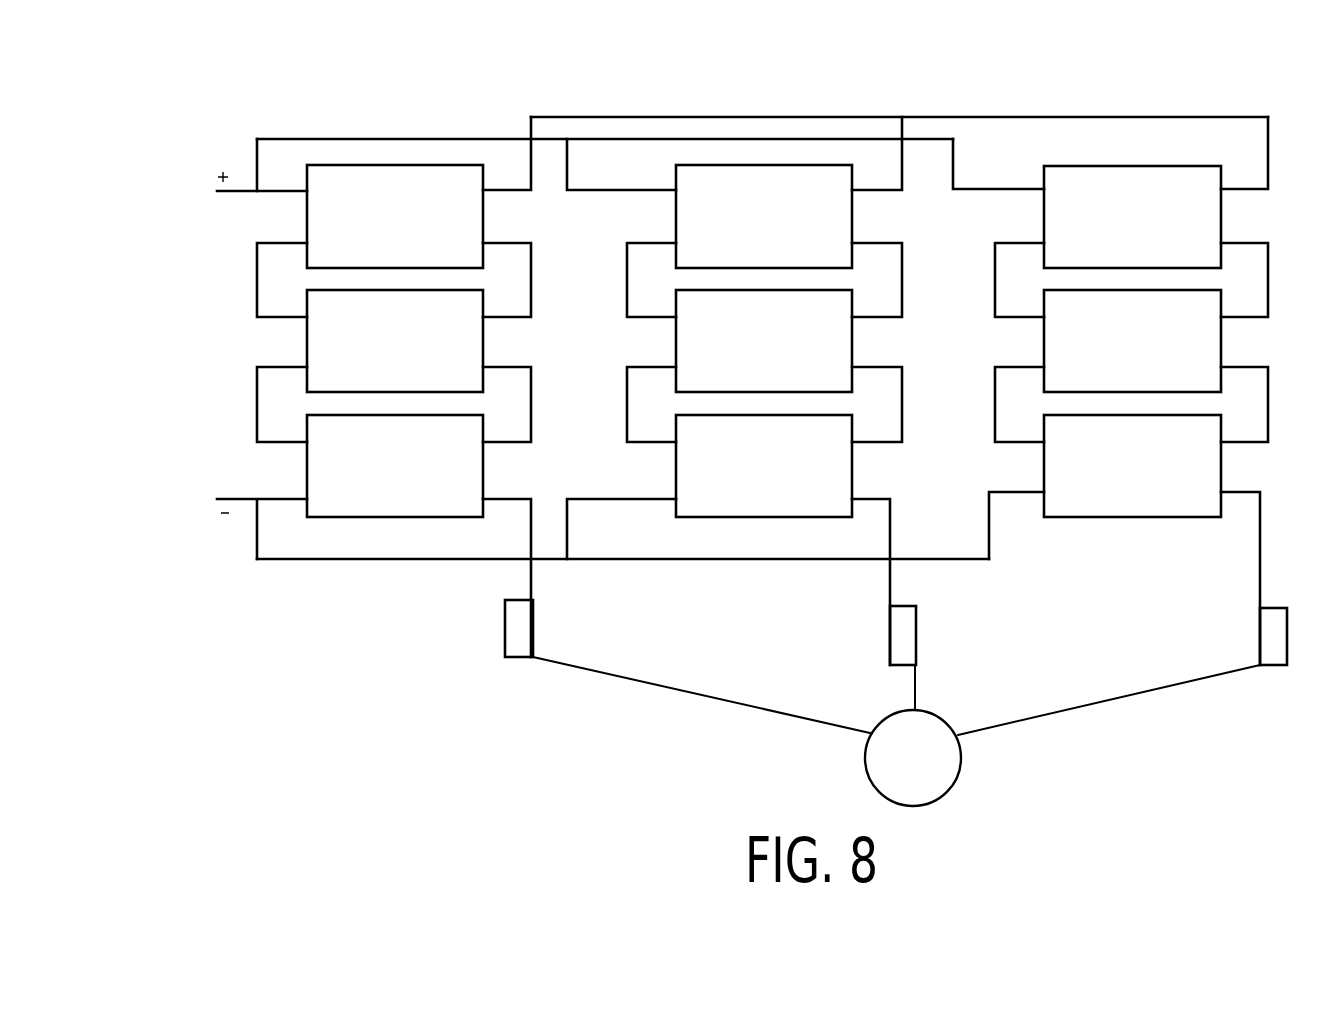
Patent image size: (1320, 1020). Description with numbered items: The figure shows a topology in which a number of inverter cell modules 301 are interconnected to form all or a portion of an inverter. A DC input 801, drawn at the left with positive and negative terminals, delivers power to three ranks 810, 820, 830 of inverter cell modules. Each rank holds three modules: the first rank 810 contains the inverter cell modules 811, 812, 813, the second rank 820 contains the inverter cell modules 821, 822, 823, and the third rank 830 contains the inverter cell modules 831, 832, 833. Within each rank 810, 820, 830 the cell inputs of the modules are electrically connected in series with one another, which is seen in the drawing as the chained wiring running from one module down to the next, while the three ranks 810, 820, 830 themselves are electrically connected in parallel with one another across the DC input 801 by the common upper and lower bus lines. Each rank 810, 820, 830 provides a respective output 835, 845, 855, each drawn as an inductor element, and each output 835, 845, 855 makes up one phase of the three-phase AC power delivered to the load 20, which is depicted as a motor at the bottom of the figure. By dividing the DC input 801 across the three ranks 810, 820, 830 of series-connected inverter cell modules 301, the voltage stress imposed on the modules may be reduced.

The load 20 is at (875, 782).
The inverter cell module 301 is at (307, 199).
The DC input 801 is at (212, 172).
The first rank 810 is at (480, 106).
The inverter cell module 811 is at (484, 233).
The inverter cell module 812 is at (484, 355).
The inverter cell module 813 is at (484, 479).
The second rank 820 is at (913, 106).
The inverter cell module 821 is at (853, 233).
The inverter cell module 822 is at (853, 355).
The inverter cell module 823 is at (853, 479).
The third rank 830 is at (1243, 106).
The inverter cell module 831 is at (1222, 233).
The inverter cell module 832 is at (1222, 355).
The inverter cell module 833 is at (1222, 479).
The output 835 is at (505, 650).
The output 845 is at (890, 647).
The output 855 is at (1260, 636).